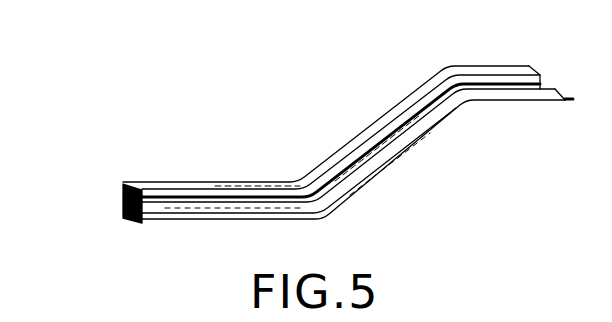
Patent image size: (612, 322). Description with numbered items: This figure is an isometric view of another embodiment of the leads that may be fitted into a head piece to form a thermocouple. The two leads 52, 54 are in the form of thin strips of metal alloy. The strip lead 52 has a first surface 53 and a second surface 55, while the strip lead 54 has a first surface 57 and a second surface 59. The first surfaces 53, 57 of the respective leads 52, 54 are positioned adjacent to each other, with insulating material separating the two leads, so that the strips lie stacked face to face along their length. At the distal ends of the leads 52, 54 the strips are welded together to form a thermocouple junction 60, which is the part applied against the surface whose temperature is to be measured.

The lead 52 is at (451, 66).
The first surface 53 is at (523, 66).
The second surface 55 is at (372, 123).
The first surface 57 is at (374, 164).
The lead 54 is at (394, 156).
The second surface 59 is at (510, 102).
The thermocouple junction 60 is at (120, 200).